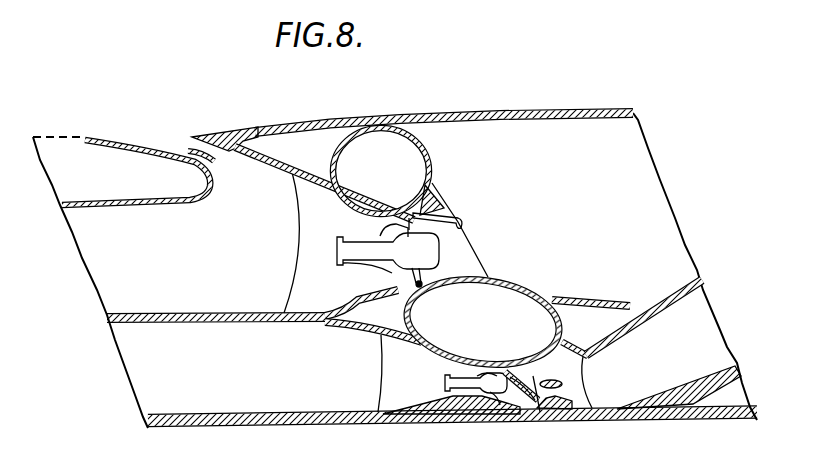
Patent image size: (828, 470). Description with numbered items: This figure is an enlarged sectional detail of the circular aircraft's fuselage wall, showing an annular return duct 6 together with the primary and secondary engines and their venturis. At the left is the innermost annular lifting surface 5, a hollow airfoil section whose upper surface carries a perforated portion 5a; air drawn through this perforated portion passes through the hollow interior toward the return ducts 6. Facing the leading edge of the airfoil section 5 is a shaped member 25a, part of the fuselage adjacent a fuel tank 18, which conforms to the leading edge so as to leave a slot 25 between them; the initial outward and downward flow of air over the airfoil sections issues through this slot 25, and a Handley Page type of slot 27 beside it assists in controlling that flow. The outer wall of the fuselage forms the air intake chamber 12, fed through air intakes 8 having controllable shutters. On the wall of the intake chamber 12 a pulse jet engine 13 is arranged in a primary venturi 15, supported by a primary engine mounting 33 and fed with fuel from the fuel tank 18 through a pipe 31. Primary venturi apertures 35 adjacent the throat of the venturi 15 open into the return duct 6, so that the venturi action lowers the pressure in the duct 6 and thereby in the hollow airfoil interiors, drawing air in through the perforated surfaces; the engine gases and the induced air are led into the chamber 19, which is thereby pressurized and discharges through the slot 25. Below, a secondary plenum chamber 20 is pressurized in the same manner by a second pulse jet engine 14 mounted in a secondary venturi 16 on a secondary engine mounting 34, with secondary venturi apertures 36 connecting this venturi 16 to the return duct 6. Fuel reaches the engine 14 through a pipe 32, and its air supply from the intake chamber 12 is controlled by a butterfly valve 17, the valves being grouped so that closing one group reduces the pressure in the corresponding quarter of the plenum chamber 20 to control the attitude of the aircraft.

The perforated portion of airfoil section 5 5a is at (63, 135).
The annular lifting surface 5 is at (118, 150).
The Handley Page type slot 27 is at (184, 145).
The shaped member 25a is at (224, 134).
The slot 25 is at (226, 158).
The fuel tank 18 is at (303, 137).
The annular return duct 6 is at (364, 140).
The air intake 8 is at (505, 110).
The primary venturi 15 is at (375, 219).
The pipe 31 is at (460, 222).
The air intake chamber 12 is at (600, 204).
The pulse jet engine 13 is at (437, 252).
The primary engine mounting 33 is at (410, 270).
The primary venturi aperture 35 is at (420, 290).
The secondary venturi aperture 36 is at (499, 372).
The secondary venturi 16 is at (440, 372).
The secondary engine mounting 34 is at (468, 398).
The pulse jet engine 14 is at (482, 402).
The pipe 32 is at (538, 392).
The butterfly valve 17 is at (565, 388).
The chamber 19 is at (167, 275).
The secondary plenum chamber 20 is at (195, 380).